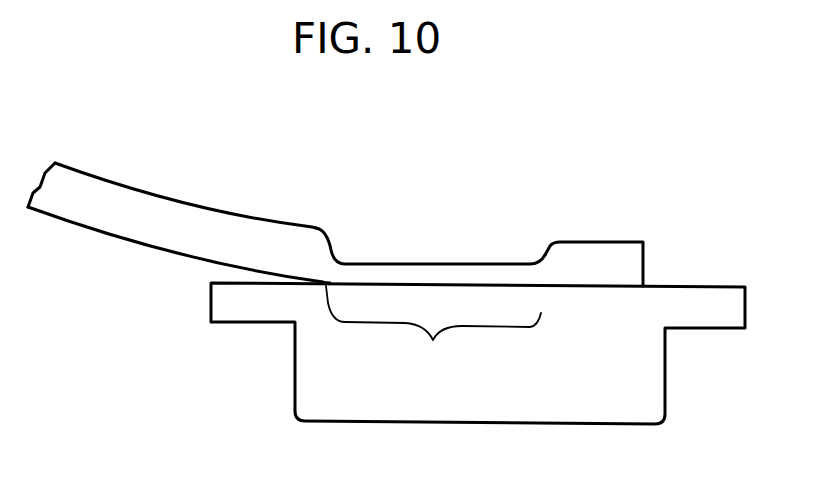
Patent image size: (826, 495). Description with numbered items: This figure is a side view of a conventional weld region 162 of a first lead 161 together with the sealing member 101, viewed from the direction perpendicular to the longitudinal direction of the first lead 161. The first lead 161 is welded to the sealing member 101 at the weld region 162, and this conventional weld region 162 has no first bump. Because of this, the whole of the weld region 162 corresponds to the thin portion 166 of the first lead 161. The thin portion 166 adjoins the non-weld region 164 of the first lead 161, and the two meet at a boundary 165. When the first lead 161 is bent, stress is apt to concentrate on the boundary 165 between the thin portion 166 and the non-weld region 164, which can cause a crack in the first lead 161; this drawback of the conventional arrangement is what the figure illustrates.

The sealing member 101 is at (620, 385).
The first lead 161 is at (652, 258).
The weld region 162 is at (433, 338).
The non-weld region 164 is at (183, 222).
The boundary 165 is at (324, 290).
The thin portion 166 is at (377, 263).